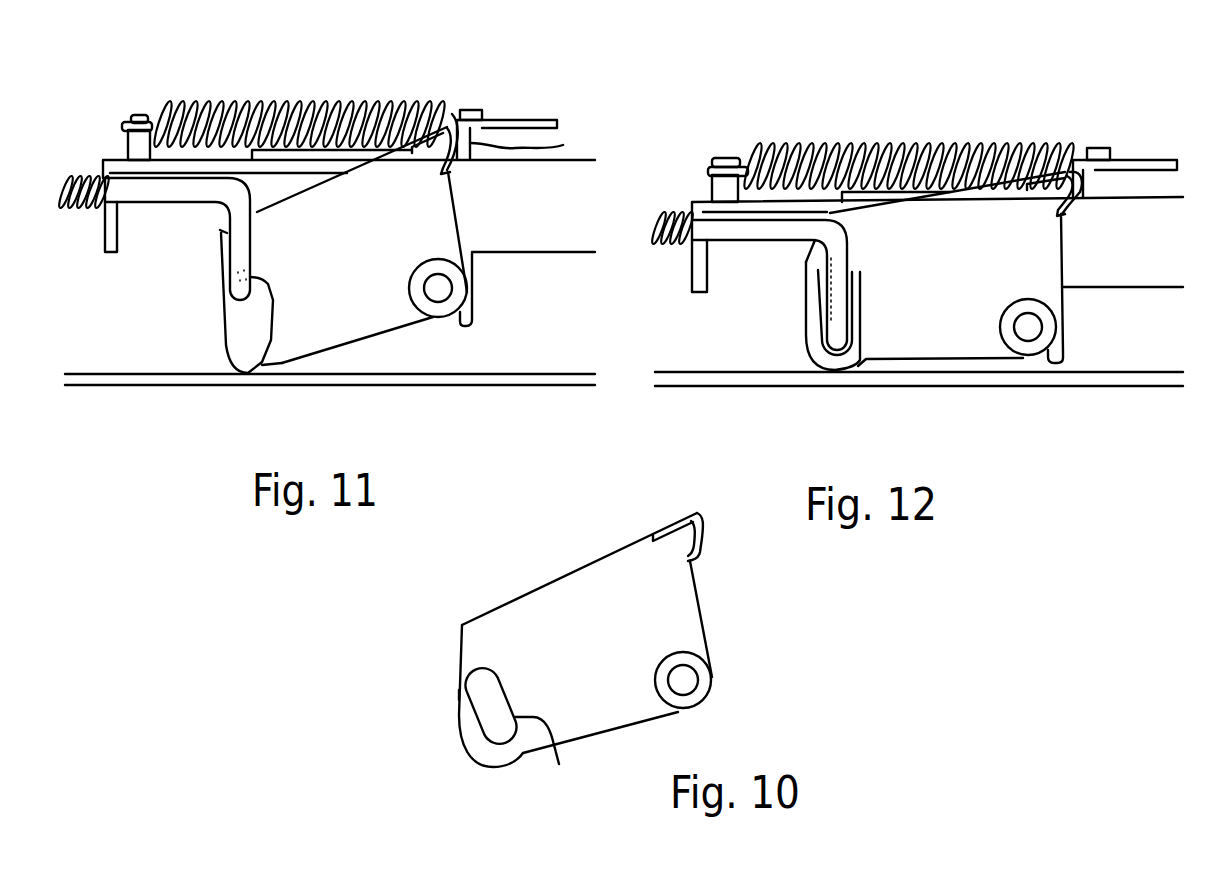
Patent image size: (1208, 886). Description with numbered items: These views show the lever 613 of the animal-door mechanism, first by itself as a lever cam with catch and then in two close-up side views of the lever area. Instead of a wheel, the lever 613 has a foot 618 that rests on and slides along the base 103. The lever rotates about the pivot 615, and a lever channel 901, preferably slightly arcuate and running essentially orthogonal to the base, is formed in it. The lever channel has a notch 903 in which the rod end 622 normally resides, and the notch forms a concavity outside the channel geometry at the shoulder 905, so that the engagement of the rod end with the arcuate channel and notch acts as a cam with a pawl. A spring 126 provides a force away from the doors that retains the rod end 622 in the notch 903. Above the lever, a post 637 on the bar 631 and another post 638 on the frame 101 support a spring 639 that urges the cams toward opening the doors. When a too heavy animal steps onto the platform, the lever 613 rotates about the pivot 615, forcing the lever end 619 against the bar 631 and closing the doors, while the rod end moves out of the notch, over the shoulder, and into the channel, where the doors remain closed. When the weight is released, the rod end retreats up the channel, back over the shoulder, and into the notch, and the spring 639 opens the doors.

In FIG. 11, the frame 101 is at (545, 212).
In FIG. 12, the frame 101 is at (1127, 263).
In FIG. 11, the base 103 is at (463, 372).
In FIG. 12, the base 103 is at (1090, 368).
In FIG. 11, the spring 126 is at (92, 205).
In FIG. 10, the lever 613 is at (610, 650).
In FIG. 10, the pivot 615 is at (712, 680).
In FIG. 11, the foot 618 is at (270, 370).
In FIG. 12, the foot 618 is at (833, 316).
In FIG. 10, the foot 618 is at (498, 754).
In FIG. 10, the lever end 619 is at (697, 513).
In FIG. 11, the rod end 622 is at (237, 287).
In FIG. 12, the rod end 622 is at (833, 323).
In FIG. 11, the bar 631 is at (563, 146).
In FIG. 11, the post 637 is at (478, 110).
In FIG. 11, the post 638 is at (138, 114).
In FIG. 11, the spring 639 is at (258, 102).
In FIG. 11, the lever channel 901 is at (250, 343).
In FIG. 10, the lever channel 901 is at (559, 764).
In FIG. 12, the notch 903 is at (825, 247).
In FIG. 10, the notch 903 is at (470, 684).
In FIG. 10, the shoulder 905 is at (475, 692).